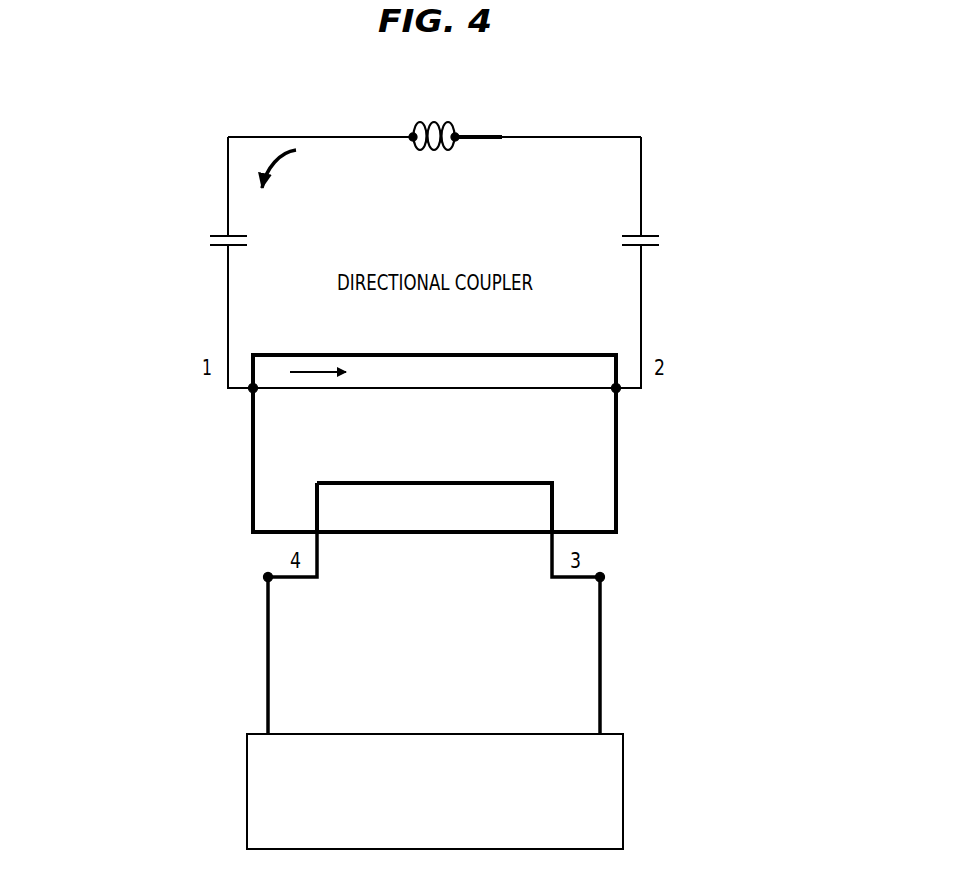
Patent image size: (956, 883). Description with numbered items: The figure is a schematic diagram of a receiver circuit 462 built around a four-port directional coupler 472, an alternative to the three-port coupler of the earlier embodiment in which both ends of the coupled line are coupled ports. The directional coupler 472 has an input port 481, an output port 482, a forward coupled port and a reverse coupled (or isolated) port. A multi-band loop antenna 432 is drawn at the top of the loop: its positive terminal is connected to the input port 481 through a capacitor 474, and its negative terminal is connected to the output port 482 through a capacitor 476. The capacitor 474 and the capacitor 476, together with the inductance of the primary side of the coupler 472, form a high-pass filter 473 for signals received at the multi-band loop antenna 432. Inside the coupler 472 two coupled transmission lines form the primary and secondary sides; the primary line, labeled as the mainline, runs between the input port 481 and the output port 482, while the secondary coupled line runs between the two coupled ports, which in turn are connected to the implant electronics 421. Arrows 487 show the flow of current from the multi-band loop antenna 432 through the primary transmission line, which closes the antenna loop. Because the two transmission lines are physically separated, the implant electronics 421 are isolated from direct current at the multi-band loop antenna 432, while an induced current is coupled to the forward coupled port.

The multi-band loop antenna 432 is at (416, 128).
The arrows 487 is at (268, 170).
The high-pass filter 473 is at (140, 158).
The receiver circuit 462 is at (728, 156).
The capacitor 474 is at (218, 235).
The capacitor 476 is at (652, 235).
The directional coupler 472 is at (433, 353).
The input port 481 is at (250, 390).
The output port 482 is at (620, 391).
The implant electronics 421 is at (624, 793).